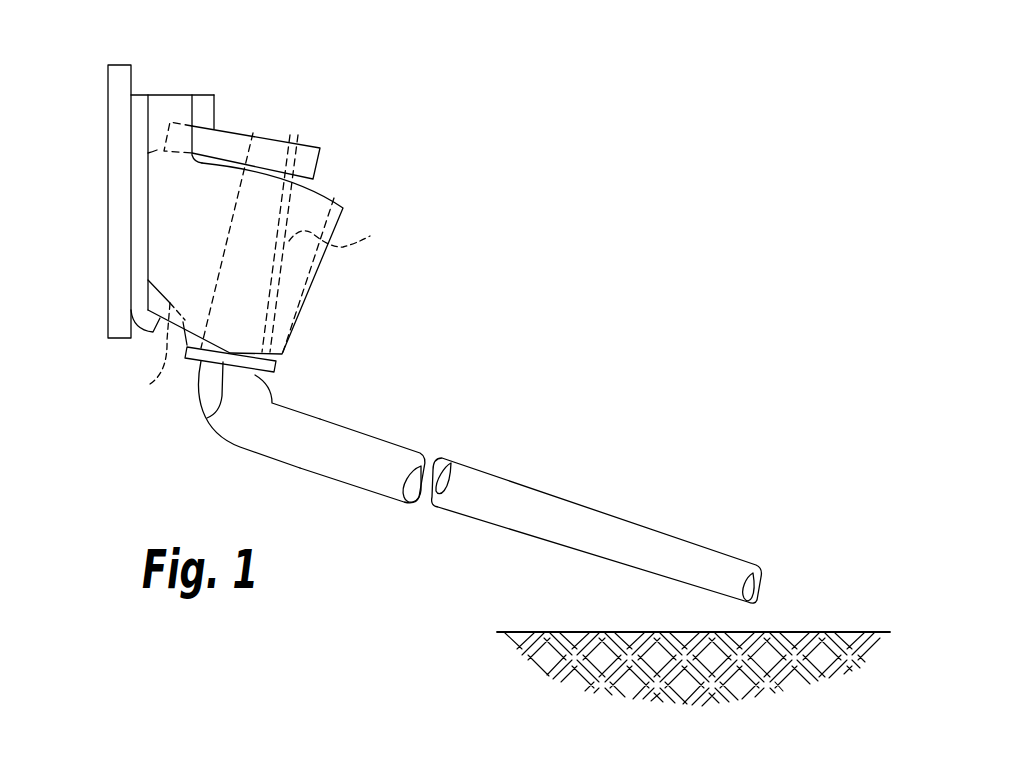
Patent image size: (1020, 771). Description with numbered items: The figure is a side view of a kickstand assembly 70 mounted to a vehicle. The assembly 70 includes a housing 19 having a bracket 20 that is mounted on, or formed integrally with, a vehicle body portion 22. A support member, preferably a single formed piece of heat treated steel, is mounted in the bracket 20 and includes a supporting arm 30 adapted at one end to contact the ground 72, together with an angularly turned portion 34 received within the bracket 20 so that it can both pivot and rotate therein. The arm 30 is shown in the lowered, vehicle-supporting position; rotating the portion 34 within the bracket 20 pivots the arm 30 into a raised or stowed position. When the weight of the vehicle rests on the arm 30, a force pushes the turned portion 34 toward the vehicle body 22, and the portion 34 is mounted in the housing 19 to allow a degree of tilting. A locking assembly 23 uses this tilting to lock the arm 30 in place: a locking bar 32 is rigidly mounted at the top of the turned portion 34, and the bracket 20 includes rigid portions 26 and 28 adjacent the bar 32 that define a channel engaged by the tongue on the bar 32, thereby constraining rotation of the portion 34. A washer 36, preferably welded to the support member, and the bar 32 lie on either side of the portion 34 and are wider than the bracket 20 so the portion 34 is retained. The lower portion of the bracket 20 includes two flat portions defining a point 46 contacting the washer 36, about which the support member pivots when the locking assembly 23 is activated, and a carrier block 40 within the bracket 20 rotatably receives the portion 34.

The housing 19 is at (342, 187).
The bracket 20 is at (313, 276).
The vehicle body portion 22 is at (117, 150).
The locking assembly 23 is at (267, 94).
The rigid portion 26 is at (204, 97).
The rigid portion 28 is at (162, 99).
The supporting arm 30 is at (360, 440).
The locking bar 32 is at (306, 131).
The angularly turned portion 34 is at (248, 307).
The washer 36 is at (275, 371).
The carrier block 40 is at (259, 307).
The point 46 is at (207, 418).
The kickstand assembly 70 is at (485, 91).
The ground 72 is at (587, 632).